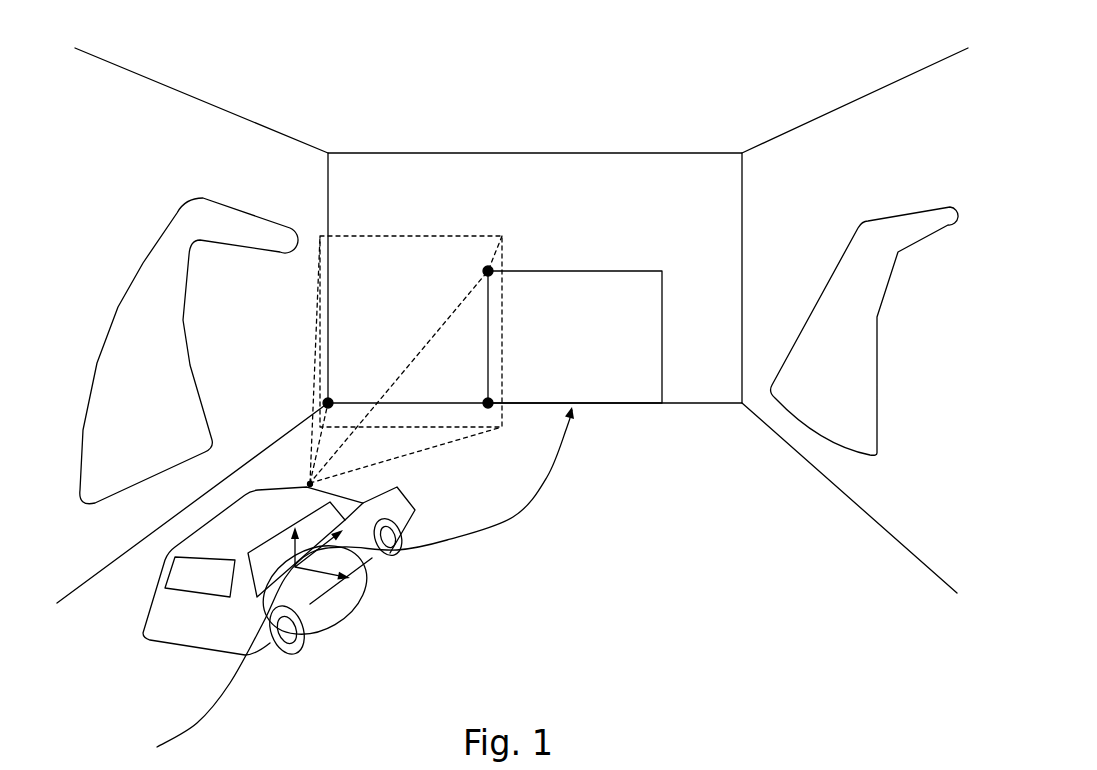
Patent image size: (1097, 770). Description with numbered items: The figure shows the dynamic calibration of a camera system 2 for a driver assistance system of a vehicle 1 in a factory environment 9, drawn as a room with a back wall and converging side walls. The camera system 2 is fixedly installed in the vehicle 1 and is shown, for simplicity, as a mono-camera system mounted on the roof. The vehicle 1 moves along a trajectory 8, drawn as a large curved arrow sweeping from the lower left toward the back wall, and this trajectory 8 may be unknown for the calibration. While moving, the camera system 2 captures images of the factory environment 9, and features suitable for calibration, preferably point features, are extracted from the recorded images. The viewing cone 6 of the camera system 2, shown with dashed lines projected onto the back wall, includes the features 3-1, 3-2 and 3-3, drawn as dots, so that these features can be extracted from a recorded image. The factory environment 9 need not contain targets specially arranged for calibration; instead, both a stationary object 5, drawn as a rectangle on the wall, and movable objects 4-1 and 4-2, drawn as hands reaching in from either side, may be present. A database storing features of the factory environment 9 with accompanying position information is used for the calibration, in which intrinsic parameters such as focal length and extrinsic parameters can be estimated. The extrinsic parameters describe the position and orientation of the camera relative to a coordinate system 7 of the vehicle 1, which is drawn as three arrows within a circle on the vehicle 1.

The vehicle 1 is at (324, 636).
The camera system 2 is at (310, 483).
The feature 3-1 is at (320, 397).
The feature 3-2 is at (492, 398).
The feature 3-3 is at (492, 268).
The movable object 4-1 is at (128, 280).
The movable object 4-2 is at (897, 213).
The stationary object 5 is at (628, 271).
The viewing cone 6 is at (420, 462).
The coordinate system 7 is at (310, 605).
The trajectory 8 is at (520, 520).
The factory environment 9 is at (710, 88).